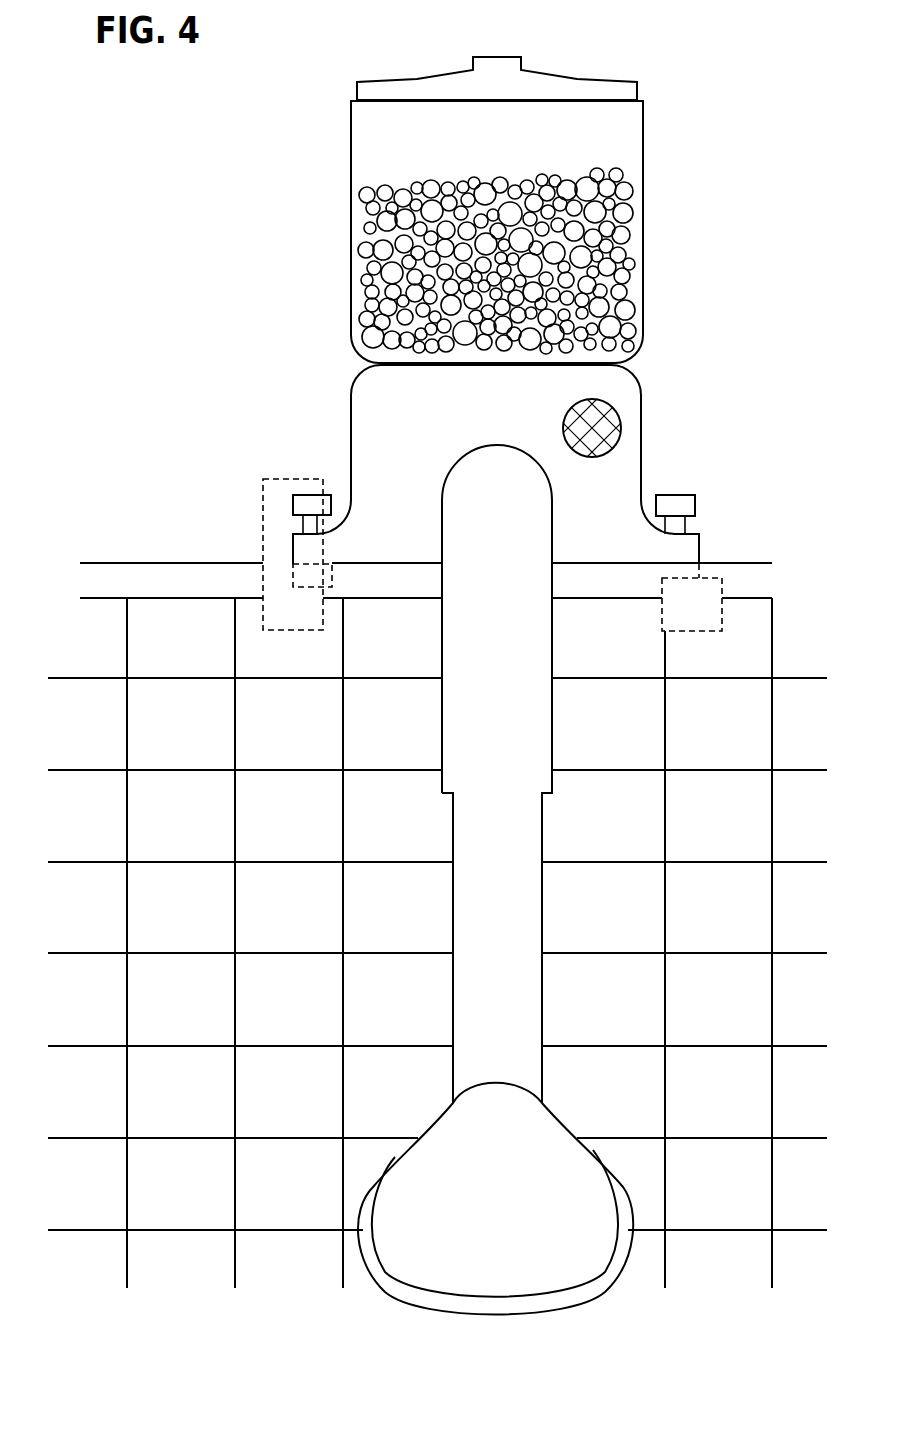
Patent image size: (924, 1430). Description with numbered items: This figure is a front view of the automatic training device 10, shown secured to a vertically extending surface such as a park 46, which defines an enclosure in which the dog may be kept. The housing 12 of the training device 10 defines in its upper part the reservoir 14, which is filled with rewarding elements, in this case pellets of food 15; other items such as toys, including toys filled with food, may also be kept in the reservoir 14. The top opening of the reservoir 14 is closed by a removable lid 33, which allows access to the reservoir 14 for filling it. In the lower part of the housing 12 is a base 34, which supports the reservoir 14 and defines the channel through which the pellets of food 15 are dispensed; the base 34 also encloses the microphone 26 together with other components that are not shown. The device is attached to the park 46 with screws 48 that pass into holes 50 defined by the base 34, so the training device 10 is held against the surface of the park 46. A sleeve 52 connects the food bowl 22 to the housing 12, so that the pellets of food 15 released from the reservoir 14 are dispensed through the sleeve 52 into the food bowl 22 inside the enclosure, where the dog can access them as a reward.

The automatic training device 10 is at (150, 376).
The housing 12 is at (340, 154).
The reservoir 14 is at (643, 131).
The pellets of food 15 is at (355, 240).
The food bowl 22 is at (367, 1200).
The microphone 26 is at (621, 428).
The removable lid 33 is at (413, 82).
The base 34 is at (351, 438).
The park 46 is at (120, 562).
The screws 48 is at (300, 506).
The holes 50 is at (303, 522).
The sleeve 52 is at (453, 830).